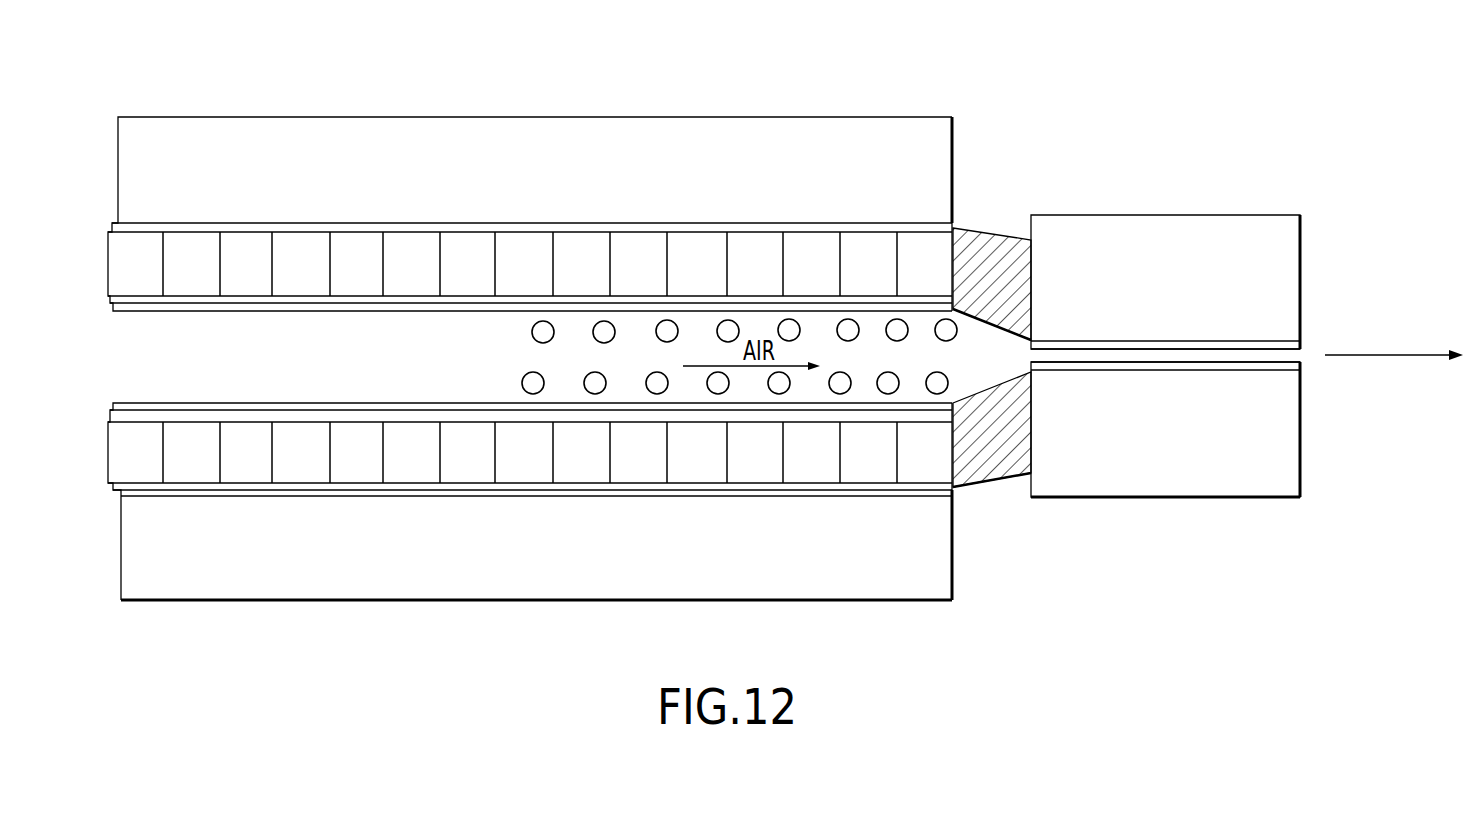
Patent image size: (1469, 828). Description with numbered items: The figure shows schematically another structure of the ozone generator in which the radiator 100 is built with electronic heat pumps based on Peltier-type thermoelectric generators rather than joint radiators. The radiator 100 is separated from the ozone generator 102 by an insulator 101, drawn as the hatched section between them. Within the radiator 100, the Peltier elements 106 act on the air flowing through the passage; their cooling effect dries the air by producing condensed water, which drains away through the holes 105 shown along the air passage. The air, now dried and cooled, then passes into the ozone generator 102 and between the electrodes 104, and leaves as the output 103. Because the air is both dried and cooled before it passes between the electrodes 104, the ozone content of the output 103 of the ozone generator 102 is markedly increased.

The radiator 100 is at (503, 133).
The insulator 101 is at (978, 228).
The ozone generator 102 is at (1113, 217).
The output 103 is at (1357, 352).
The electrodes 104 is at (1282, 370).
The holes 105 is at (897, 330).
The Peltier elements 106 is at (851, 462).